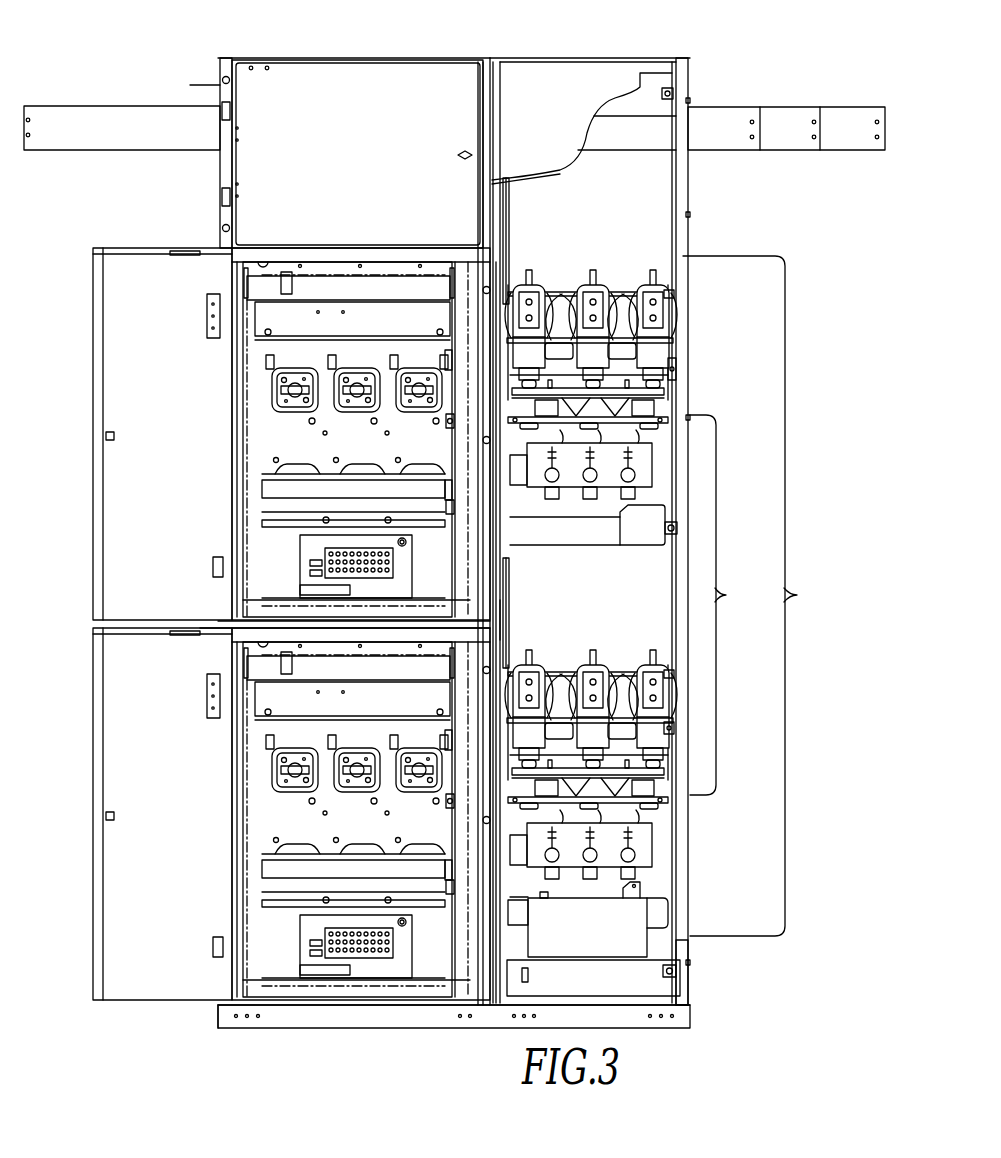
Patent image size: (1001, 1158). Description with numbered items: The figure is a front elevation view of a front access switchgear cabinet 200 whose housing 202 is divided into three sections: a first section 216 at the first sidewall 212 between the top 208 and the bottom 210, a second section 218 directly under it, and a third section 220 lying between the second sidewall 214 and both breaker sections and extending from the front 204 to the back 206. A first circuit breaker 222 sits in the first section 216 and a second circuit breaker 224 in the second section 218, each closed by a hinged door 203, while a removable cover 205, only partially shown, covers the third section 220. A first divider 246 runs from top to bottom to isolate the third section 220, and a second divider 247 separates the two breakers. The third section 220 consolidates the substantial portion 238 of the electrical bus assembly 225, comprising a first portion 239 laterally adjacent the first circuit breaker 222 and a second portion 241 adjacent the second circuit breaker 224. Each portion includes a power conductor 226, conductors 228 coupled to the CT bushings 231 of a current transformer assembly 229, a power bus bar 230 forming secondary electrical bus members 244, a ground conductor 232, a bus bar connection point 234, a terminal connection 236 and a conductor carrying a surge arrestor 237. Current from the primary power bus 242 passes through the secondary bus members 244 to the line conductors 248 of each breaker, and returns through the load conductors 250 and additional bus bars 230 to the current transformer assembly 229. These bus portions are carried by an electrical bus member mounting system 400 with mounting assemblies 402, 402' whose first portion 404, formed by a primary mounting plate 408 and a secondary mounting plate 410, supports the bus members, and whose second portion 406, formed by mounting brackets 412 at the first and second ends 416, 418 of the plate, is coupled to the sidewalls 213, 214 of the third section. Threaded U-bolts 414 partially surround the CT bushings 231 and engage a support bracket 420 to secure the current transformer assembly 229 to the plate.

The switchgear cabinet 200 is at (364, 1073).
The housing 202 is at (291, 1022).
The hinged covers or doors 203 is at (110, 464).
The front 204 is at (352, 70).
The removable cover 205 is at (558, 92).
The back 206 is at (692, 980).
The top 208 is at (626, 62).
The bottom 210 is at (400, 1028).
The first sidewall 212 is at (218, 184).
The first sidewall of third section 213 is at (506, 616).
The second sidewall 214 is at (690, 236).
The first section 216 is at (268, 378).
The second section 218 is at (272, 808).
The third section 220 is at (618, 630).
The first circuit breaker 222 is at (246, 402).
The second circuit breaker 224 is at (246, 858).
The electrical bus assembly 225 is at (498, 262).
The power conductor 226 is at (660, 160).
The conductor 228 is at (672, 312).
The current transformer assembly 229 is at (532, 384).
The power bus bar 230 is at (520, 476).
The current transformer bushings 231 is at (548, 300).
The ground conductor 232 is at (665, 948).
The bus bar connection point 234 is at (664, 523).
The terminal connection 236 is at (580, 274).
The surge arrestor 237 is at (588, 448).
The substantial portion of electrical bus members 238 is at (824, 609).
The first portion 239 is at (672, 422).
The second portion 241 is at (678, 732).
The primary power bus 242 is at (108, 108).
The secondary electrical bus members 244 is at (517, 548).
The first divider 246 is at (499, 182).
The second divider 247 is at (278, 627).
The line conductors 248 is at (404, 367).
The load conductors 250 is at (283, 462).
The electrical bus member mounting system 400 is at (754, 615).
The mounting assembly 402 is at (663, 357).
The mounting assembly 402' is at (640, 764).
The first portion 404 is at (504, 358).
The second portion 406 is at (672, 383).
The primary mounting plate 408 is at (622, 357).
The secondary mounting plate 410 is at (690, 390).
The mounting brackets 412 is at (676, 374).
The threaded U-bolts 414 is at (560, 300).
The first end 416 is at (678, 298).
The second end 418 is at (508, 308).
The support bracket 420 is at (450, 424).